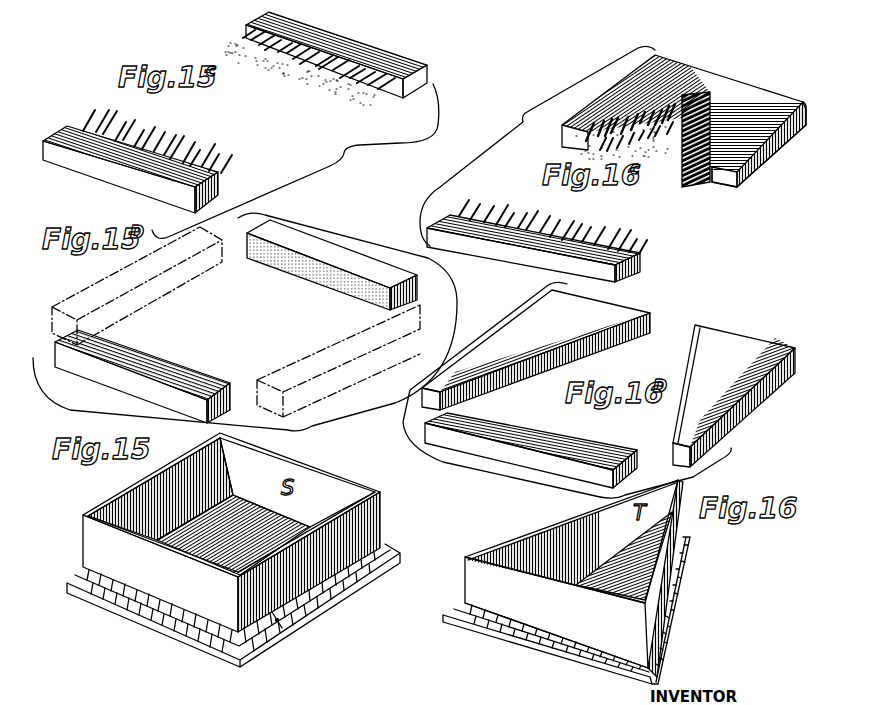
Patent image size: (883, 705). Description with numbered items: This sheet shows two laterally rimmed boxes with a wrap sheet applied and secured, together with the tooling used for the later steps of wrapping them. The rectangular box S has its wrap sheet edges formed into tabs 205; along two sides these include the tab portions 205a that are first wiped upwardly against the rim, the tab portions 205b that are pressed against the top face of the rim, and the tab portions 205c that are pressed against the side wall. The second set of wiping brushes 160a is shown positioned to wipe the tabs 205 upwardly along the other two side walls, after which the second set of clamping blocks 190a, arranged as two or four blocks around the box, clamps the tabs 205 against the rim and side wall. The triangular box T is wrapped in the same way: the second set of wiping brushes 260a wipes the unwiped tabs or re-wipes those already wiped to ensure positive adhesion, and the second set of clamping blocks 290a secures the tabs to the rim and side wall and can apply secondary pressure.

In FIG. 15C, the second set of wiping brushes 160a is at (380, 55).
In FIG. 15D, the second set of clamping blocks 190a is at (68, 390).
In FIG. 15, the tabs 205 is at (167, 635).
In FIG. 15, the tab portions 205a is at (222, 655).
In FIG. 15, the tab portions 205b is at (367, 588).
In FIG. 15, the tab portions 205c is at (278, 622).
In FIG. 16C, the second set of wiping brushes 260a is at (733, 160).
In FIG. 16D, the second set of clamping blocks 290a is at (733, 345).